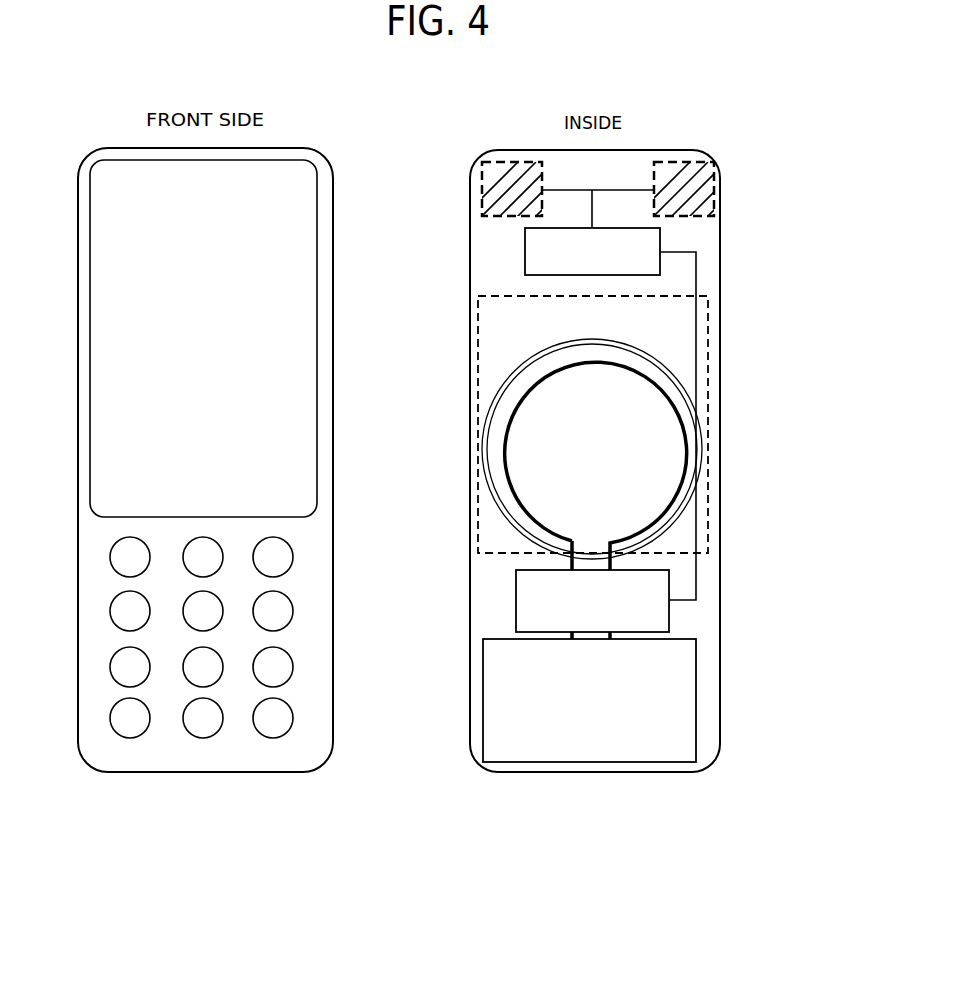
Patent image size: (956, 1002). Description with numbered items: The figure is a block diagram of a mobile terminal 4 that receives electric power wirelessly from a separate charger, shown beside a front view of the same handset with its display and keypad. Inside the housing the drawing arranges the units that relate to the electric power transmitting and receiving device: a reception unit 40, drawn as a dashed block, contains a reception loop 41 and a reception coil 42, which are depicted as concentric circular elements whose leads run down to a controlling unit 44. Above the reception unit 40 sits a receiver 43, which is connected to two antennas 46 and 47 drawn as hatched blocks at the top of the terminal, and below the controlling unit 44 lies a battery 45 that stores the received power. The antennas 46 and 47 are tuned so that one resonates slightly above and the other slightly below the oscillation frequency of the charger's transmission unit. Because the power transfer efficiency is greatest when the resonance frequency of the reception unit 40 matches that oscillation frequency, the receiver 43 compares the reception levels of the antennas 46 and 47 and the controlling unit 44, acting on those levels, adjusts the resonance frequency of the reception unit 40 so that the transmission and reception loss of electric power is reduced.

The mobile terminal 4 is at (218, 773).
The reception unit 40 is at (708, 316).
The reception loop 41 is at (507, 468).
The reception coil 42 is at (502, 394).
The receiver 43 is at (525, 249).
The controlling unit 44 is at (516, 583).
The battery 45 is at (503, 692).
The antenna 46 is at (493, 163).
The antenna 47 is at (700, 181).